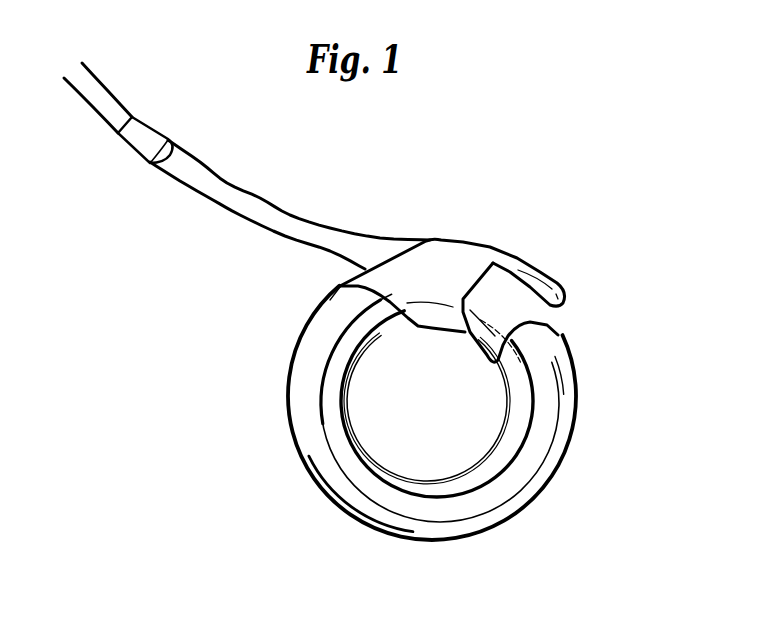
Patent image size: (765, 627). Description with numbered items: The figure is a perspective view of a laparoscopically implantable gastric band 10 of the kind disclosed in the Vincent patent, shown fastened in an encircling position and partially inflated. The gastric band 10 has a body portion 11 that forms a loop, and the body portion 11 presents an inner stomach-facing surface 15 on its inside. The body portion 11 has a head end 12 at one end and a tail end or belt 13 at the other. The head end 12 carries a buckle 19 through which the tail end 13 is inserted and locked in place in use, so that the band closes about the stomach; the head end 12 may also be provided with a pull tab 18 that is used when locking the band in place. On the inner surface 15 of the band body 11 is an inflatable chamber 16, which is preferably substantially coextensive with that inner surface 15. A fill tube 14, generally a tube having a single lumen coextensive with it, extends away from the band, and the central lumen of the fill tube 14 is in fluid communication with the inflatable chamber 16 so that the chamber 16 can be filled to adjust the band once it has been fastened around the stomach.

The gastric band 10 is at (356, 176).
The body portion 11 is at (572, 447).
The head end 12 is at (333, 297).
The tail end 13 is at (557, 322).
The fill tube 14 is at (205, 207).
The inner stomach-facing surface 15 is at (530, 422).
The inflatable chamber 16 is at (470, 457).
The pull tab 18 is at (543, 275).
The buckle 19 is at (470, 243).